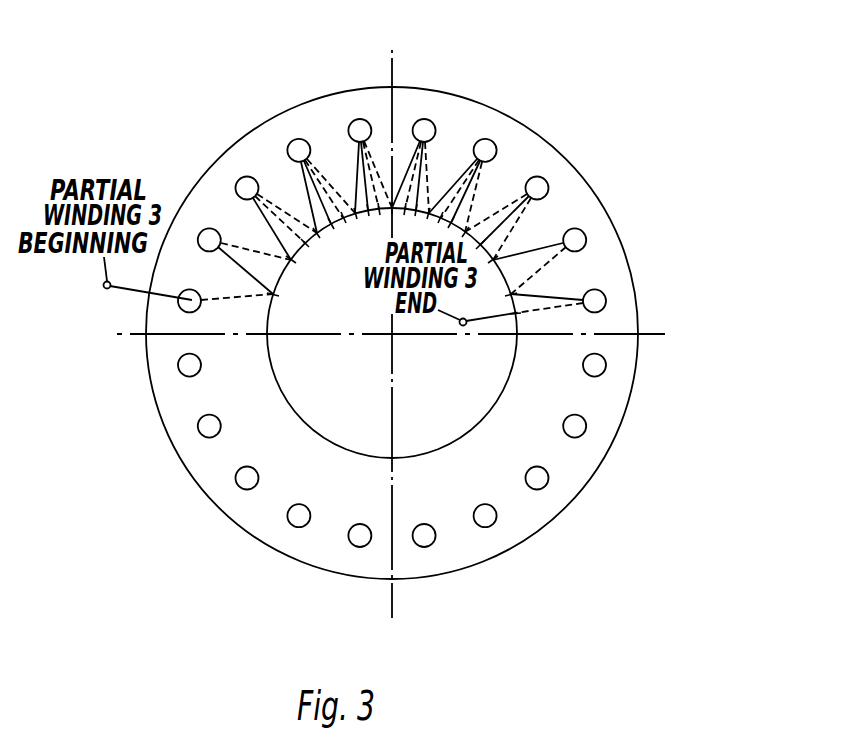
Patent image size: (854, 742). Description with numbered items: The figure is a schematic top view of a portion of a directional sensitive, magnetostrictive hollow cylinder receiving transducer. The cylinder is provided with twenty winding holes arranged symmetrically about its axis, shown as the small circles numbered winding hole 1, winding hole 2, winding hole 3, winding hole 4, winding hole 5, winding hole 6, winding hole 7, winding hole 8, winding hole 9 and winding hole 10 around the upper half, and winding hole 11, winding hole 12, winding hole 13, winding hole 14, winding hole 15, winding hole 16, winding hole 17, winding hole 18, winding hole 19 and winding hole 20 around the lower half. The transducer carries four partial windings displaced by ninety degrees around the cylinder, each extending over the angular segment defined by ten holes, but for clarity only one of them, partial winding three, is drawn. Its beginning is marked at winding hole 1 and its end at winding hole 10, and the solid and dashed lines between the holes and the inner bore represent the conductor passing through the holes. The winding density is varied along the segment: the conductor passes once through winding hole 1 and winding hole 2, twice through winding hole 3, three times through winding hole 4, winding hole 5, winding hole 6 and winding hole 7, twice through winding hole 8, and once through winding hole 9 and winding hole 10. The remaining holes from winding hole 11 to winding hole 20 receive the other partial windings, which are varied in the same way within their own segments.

The winding hole 1 is at (225, 300).
The winding hole 2 is at (244, 261).
The winding hole 3 is at (277, 219).
The winding hole 4 is at (321, 186).
The winding hole 5 is at (370, 166).
The winding hole 6 is at (414, 166).
The winding hole 7 is at (463, 185).
The winding hole 8 is at (507, 219).
The winding hole 9 is at (539, 261).
The winding hole 10 is at (558, 301).
The winding hole 11 is at (594, 365).
The winding hole 12 is at (574, 426).
The winding hole 13 is at (537, 478).
The winding hole 14 is at (485, 515).
The winding hole 15 is at (424, 535).
The winding hole 16 is at (359, 535).
The winding hole 17 is at (298, 515).
The winding hole 18 is at (247, 478).
The winding hole 19 is at (209, 426).
The winding hole 20 is at (189, 365).